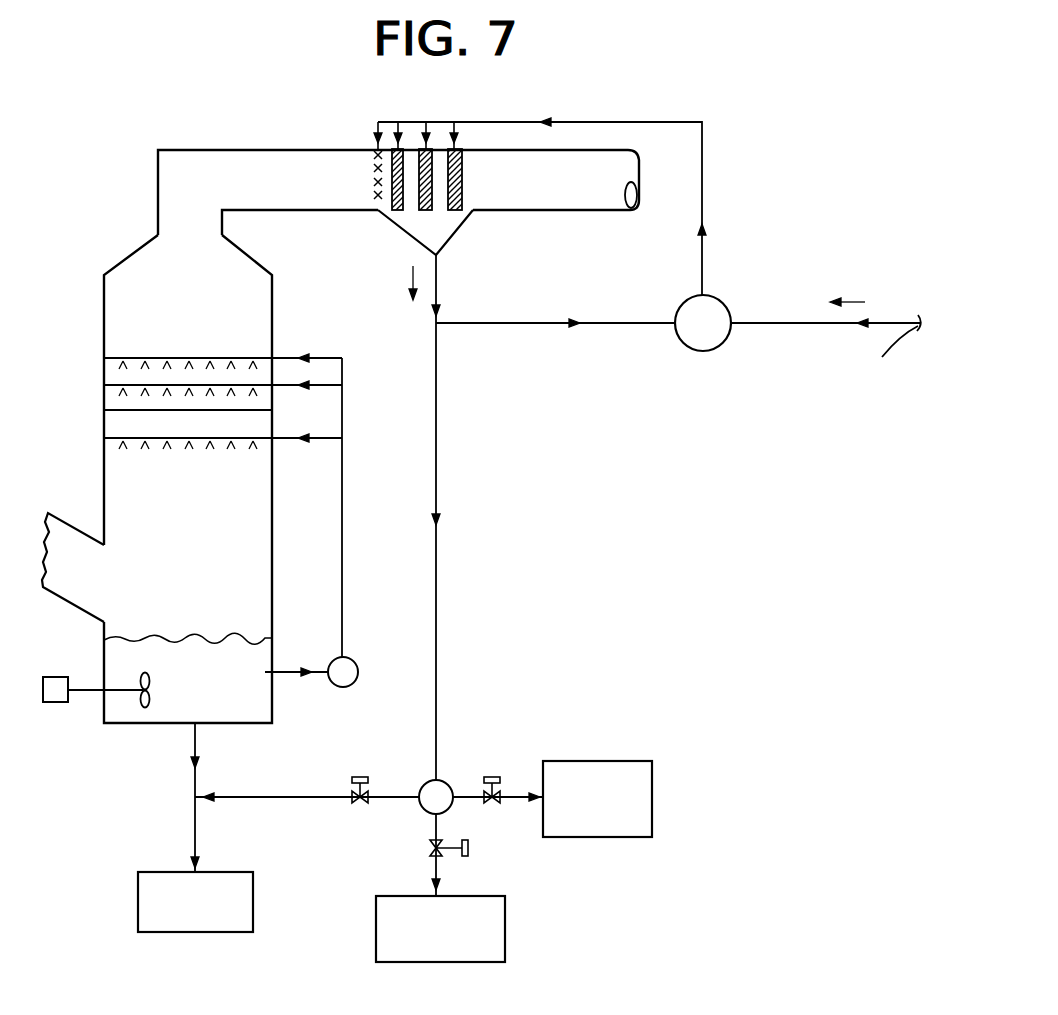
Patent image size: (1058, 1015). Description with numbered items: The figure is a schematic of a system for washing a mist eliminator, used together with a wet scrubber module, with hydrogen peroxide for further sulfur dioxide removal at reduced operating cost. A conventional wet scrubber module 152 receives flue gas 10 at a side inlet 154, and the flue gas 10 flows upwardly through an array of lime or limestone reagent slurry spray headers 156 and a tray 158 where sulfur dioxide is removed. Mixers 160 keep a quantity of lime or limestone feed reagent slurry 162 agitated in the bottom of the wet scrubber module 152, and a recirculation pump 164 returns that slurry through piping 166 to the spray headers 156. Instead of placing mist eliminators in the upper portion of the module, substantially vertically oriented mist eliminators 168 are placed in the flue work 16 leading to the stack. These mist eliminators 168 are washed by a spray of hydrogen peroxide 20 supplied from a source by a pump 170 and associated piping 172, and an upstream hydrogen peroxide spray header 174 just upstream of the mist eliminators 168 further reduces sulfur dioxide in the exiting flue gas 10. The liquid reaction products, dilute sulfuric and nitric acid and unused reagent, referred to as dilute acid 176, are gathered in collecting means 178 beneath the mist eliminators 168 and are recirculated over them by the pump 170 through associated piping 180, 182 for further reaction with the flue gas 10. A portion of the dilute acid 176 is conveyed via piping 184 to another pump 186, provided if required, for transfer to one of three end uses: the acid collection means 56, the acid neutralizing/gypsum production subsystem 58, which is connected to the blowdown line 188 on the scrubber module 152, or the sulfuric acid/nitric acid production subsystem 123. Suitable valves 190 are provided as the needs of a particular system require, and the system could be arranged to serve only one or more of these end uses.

The flue gas 10 is at (218, 181).
The flue work 16 is at (268, 168).
The hydrogen peroxide 20 is at (858, 302).
The acid collection means 56 is at (611, 814).
The acid neutralizing/gypsum production subsystem 58 is at (210, 918).
The sulfuric acid/nitric acid production subsystem 123 is at (462, 945).
The wet scrubber module 152 is at (121, 303).
The side inlet 154 is at (63, 541).
The lime or limestone reagent slurry spray headers 156 is at (153, 437).
The tray 158 is at (118, 412).
The mixers 160 is at (55, 677).
The lime or limestone feed reagent slurry 162 is at (218, 675).
The recirculation pump 164 is at (352, 683).
The piping 166 is at (343, 484).
The mist eliminators 168 is at (462, 182).
The pump 170 is at (683, 340).
The piping 172 is at (760, 321).
The upstream hydrogen peroxide spray header 174 is at (375, 178).
The dilute acid 176 is at (413, 276).
The collecting means 178 is at (450, 228).
The piping 180 is at (437, 283).
The piping 182 is at (500, 323).
The piping 184 is at (437, 484).
The pump 186 is at (424, 787).
The blowdown line 188 is at (195, 785).
The valves 190 is at (360, 777).